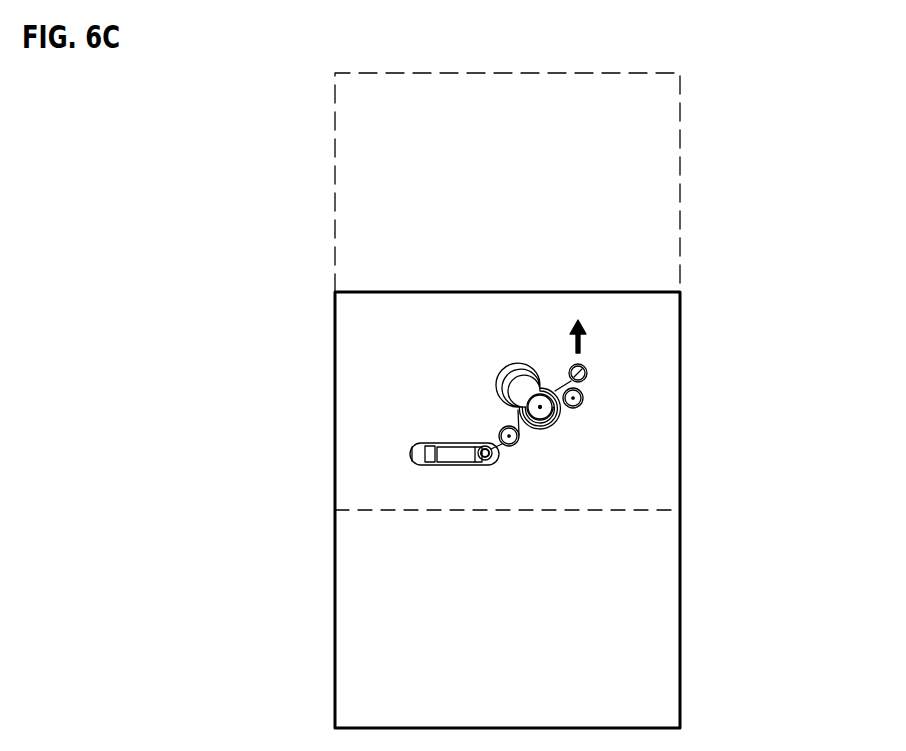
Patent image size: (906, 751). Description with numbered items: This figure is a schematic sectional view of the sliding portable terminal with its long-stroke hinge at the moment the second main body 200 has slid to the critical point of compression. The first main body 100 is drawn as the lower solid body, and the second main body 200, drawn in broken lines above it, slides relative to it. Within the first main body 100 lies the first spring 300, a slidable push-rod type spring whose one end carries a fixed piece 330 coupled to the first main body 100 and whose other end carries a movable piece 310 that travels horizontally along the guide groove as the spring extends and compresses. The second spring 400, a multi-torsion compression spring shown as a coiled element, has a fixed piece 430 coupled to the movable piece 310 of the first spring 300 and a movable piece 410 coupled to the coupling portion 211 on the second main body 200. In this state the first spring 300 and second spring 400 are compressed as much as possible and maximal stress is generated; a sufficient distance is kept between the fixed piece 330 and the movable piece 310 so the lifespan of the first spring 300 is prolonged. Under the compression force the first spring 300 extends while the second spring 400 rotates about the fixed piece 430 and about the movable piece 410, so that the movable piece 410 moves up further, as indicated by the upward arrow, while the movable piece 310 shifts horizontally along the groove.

The first main body 100 is at (666, 584).
The second main body 200 is at (672, 177).
The coupling portion 211 is at (587, 373).
The first spring 300 is at (431, 437).
The movable piece 310 is at (486, 466).
The fixed piece 330 is at (412, 466).
The second spring 400 is at (528, 372).
The movable piece 410 is at (586, 380).
The fixed piece 430 is at (505, 447).